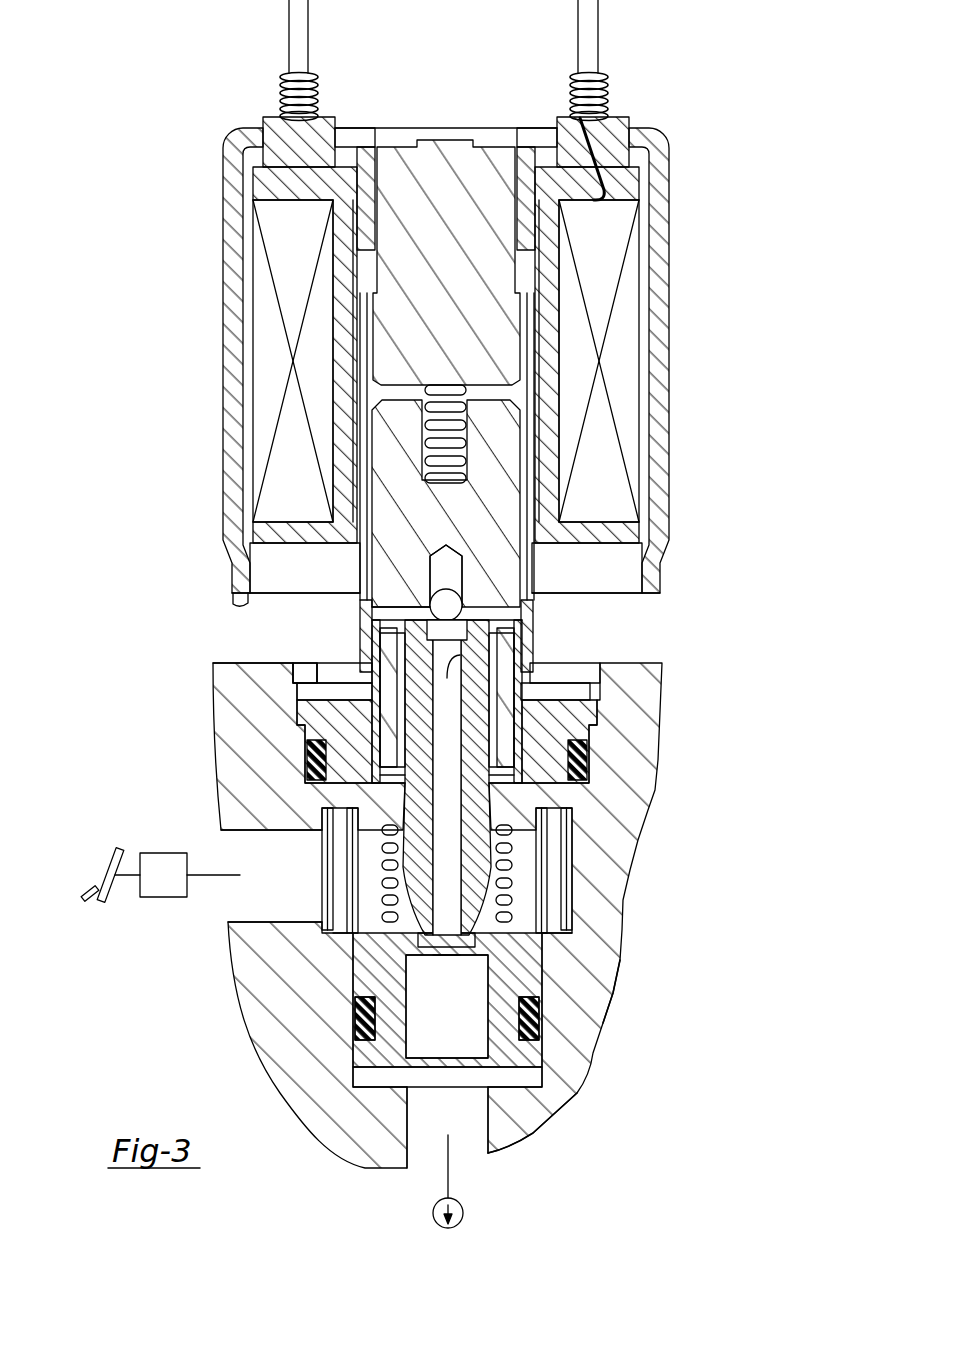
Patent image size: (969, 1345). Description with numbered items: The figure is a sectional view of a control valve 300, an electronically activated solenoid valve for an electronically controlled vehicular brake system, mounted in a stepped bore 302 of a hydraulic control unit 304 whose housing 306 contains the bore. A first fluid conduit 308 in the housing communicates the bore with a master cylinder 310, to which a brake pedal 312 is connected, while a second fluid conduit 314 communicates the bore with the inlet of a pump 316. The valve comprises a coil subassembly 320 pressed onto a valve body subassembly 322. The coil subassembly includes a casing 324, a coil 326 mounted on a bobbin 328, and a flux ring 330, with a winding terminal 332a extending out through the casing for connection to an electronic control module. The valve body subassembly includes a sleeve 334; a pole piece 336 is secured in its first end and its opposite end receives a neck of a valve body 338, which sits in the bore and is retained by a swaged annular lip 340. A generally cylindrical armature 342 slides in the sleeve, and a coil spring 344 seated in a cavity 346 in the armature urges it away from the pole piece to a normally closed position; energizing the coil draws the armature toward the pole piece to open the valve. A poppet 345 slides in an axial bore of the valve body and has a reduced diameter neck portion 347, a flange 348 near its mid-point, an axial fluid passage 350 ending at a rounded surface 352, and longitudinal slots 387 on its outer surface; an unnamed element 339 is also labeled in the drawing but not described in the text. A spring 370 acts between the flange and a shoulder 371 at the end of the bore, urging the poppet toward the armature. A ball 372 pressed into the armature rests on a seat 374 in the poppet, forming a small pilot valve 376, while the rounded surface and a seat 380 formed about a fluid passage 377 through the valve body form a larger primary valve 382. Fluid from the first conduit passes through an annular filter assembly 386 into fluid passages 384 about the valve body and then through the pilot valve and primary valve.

The control valve 300 is at (412, 614).
The stepped bore 302 is at (545, 958).
The hydraulic control unit 304 is at (580, 1097).
The housing 306 is at (587, 1032).
The first fluid conduit 308 is at (232, 930).
The master cylinder 310 is at (167, 853).
The brake pedal 312 is at (103, 873).
The second fluid conduit 314 is at (488, 1148).
The pump 316 is at (433, 1213).
The coil subassembly 320 is at (676, 184).
The valve body subassembly 322 is at (587, 993).
The casing 324 is at (236, 147).
The coil 326 is at (262, 311).
The bobbin 328 is at (282, 184).
The flux ring 330 is at (266, 584).
The winding terminal 332a is at (300, 33).
The sleeve 334 is at (525, 647).
The pole piece 336 is at (463, 143).
The valve body 338 is at (585, 730).
The guide tube 339 is at (522, 722).
The annular lip 340 is at (316, 670).
The armature 342 is at (515, 447).
The spring 344 is at (430, 478).
The poppet 345 is at (470, 818).
The cavity 346 is at (510, 890).
The neck portion 347 is at (420, 810).
The flange 348 is at (497, 797).
The axial fluid passage 350 is at (447, 668).
The rounded surface 352 is at (543, 980).
The spring 370 is at (510, 863).
The shoulder 371 is at (357, 995).
The ball 372 is at (447, 600).
The seat 374 is at (463, 615).
The pilot valve 376 is at (377, 617).
The fluid passage 377 is at (475, 1043).
The seat 380 is at (413, 920).
The primary valve 382 is at (458, 955).
The fluid passages 384 is at (540, 898).
The annular filter assembly 386 is at (337, 933).
The longitudinal slots 387 is at (403, 665).